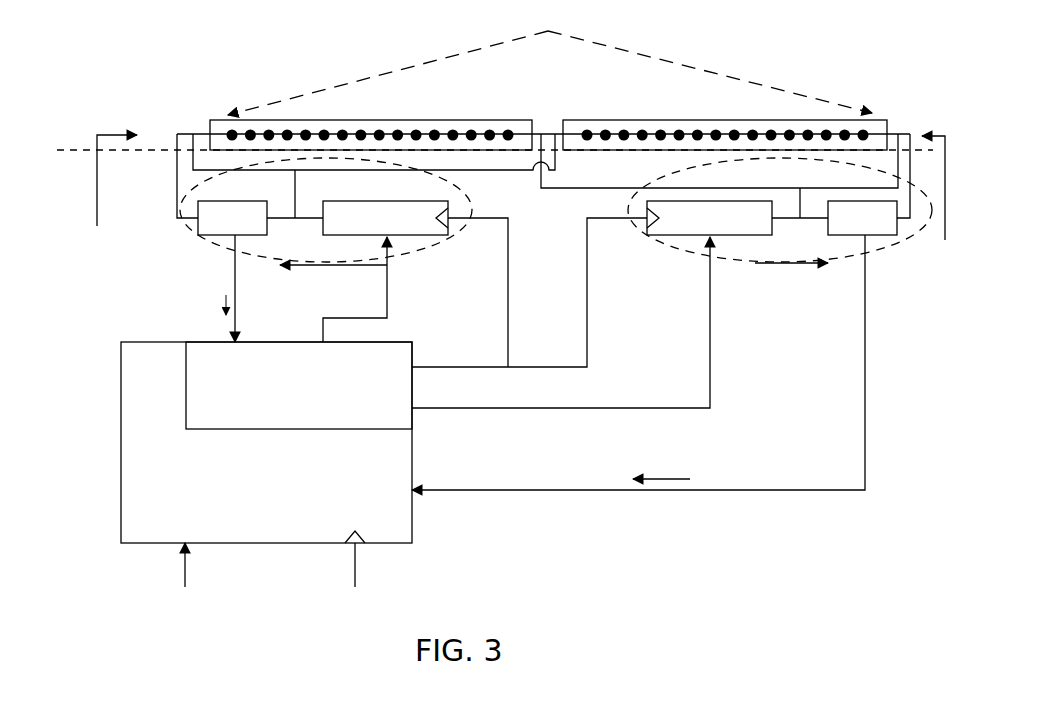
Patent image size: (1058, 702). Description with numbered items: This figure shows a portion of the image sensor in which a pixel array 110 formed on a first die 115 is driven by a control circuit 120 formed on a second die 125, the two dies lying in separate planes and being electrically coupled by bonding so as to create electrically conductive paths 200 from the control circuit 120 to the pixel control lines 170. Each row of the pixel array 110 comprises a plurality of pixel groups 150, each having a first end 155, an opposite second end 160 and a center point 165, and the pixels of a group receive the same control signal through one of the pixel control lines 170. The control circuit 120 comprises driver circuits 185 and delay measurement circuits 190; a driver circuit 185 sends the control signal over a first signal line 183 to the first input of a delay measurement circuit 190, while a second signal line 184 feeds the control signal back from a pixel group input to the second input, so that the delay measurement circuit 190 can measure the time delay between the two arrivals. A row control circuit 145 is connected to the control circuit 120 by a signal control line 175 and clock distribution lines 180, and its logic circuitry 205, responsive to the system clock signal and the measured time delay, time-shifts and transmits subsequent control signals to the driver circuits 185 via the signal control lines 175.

The pixel array 110 is at (817, 64).
The first die 115 is at (42, 135).
The second die 125 is at (42, 203).
The pixel group 150 is at (307, 128).
The first end 155 is at (208, 132).
The second end 160 is at (537, 132).
The center point 165 is at (363, 130).
The pixel control line 170 is at (243, 131).
The signal control line 175 is at (388, 300).
The clock distribution line 180 is at (452, 367).
The first signal line 183 is at (305, 219).
The second signal line 184 is at (296, 193).
The driver circuit 185 is at (367, 228).
The delay measurement circuit 190 is at (214, 228).
The electrically conductive path 200 is at (177, 199).
The control circuit 120 is at (215, 243).
The logic circuitry 205 is at (273, 419).
The row control circuit 145 is at (242, 533).